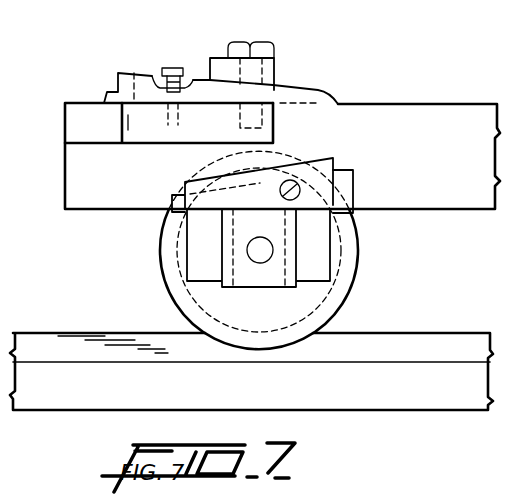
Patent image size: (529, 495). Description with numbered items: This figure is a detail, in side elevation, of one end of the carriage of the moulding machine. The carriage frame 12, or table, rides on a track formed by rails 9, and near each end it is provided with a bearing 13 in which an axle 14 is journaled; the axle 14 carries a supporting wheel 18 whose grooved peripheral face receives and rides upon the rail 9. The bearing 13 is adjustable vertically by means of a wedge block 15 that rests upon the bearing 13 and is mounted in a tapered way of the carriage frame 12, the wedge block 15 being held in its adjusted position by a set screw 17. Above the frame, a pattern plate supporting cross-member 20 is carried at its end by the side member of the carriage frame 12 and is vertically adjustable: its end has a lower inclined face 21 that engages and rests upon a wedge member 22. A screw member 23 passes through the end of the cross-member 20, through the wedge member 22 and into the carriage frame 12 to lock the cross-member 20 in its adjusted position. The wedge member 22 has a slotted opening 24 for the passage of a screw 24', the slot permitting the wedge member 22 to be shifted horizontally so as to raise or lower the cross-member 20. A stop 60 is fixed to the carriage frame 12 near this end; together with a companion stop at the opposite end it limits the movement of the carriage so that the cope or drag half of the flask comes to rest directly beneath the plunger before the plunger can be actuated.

The rails 9 is at (251, 371).
The carriage frame 12 is at (282, 156).
The bearings 13 is at (277, 262).
The axle 14 is at (253, 250).
The wedge block 15 is at (347, 186).
The set screw 17 is at (297, 182).
The supporting wheel 18 is at (259, 250).
The cross-member 20 is at (280, 67).
The inclined face 21 is at (274, 85).
The wedge member 22 is at (118, 81).
The screw member 23 is at (245, 48).
The slotted opening 24 is at (154, 79).
The screw 24' is at (178, 54).
The stop 60 is at (169, 123).